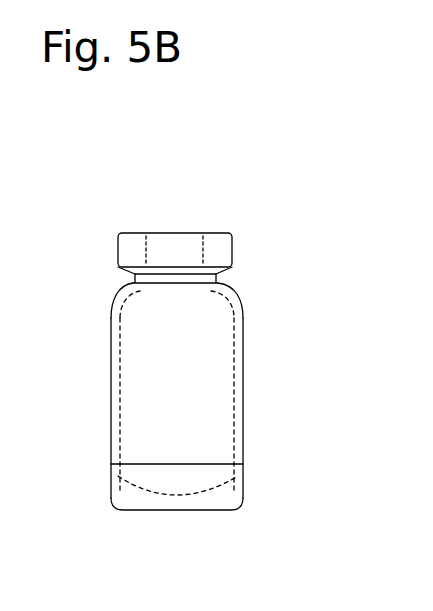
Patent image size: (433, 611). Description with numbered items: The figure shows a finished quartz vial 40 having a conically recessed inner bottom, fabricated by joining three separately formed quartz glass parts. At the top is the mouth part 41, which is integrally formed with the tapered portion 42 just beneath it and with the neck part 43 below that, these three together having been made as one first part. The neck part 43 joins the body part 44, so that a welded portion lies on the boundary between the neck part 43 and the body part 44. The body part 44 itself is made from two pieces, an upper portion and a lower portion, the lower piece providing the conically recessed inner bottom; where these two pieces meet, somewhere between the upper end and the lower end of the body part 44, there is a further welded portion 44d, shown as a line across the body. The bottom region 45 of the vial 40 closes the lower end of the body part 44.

The quartz vial 40 is at (294, 280).
The mouth part 41 is at (118, 240).
The tapered portion 42 is at (132, 281).
The neck part 43 is at (121, 288).
The body part 44 is at (112, 395).
The welded portion 44d is at (243, 465).
The bottom 45 is at (157, 510).